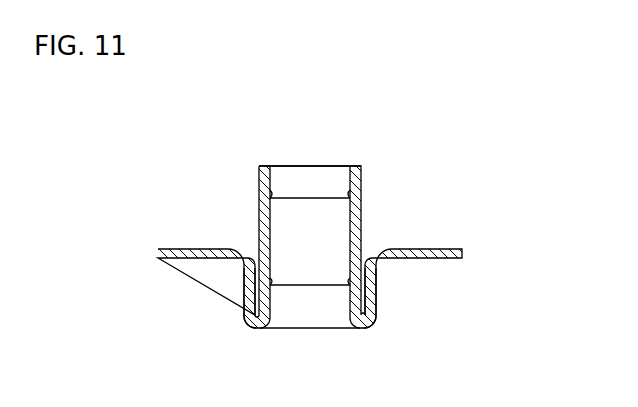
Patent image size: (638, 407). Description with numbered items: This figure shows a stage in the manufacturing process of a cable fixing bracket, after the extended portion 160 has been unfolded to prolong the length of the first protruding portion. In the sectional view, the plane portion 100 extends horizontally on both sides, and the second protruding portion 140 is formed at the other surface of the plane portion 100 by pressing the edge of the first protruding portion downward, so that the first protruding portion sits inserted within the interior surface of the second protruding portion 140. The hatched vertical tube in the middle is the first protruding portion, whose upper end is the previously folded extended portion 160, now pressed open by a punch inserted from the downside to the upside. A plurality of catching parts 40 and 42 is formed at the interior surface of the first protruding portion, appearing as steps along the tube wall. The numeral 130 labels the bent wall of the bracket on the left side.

The plane portion 100 is at (440, 249).
The first bent portion 130 is at (259, 213).
The second protruding portion 140 is at (376, 292).
The catching part 40 is at (350, 286).
The catching part 42 is at (349, 198).
The extended portion 160 is at (263, 166).